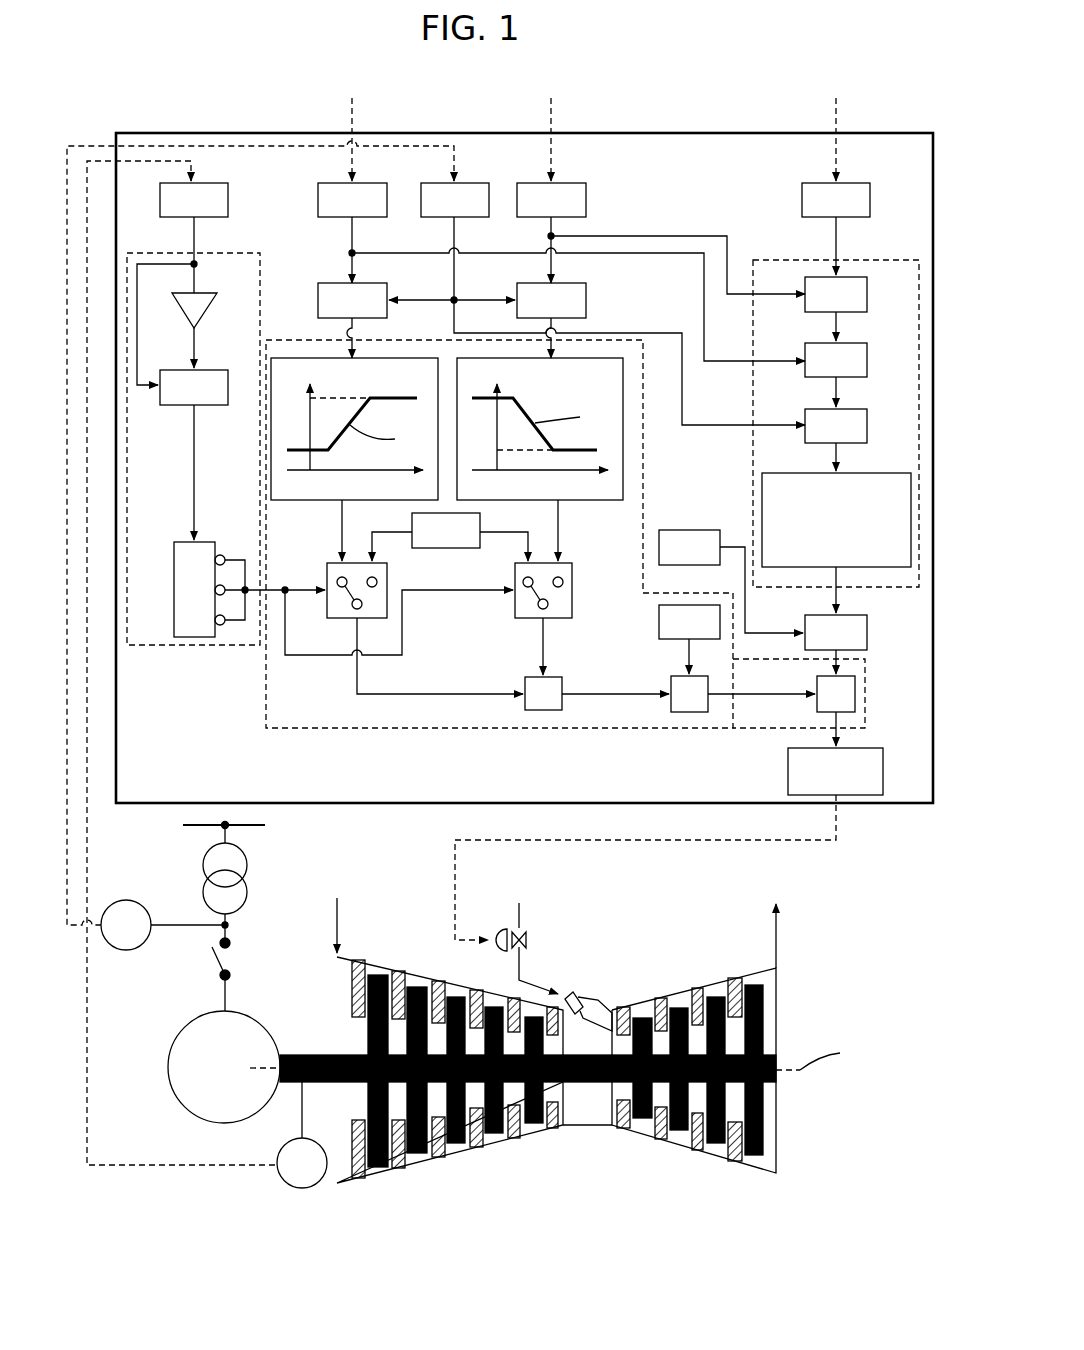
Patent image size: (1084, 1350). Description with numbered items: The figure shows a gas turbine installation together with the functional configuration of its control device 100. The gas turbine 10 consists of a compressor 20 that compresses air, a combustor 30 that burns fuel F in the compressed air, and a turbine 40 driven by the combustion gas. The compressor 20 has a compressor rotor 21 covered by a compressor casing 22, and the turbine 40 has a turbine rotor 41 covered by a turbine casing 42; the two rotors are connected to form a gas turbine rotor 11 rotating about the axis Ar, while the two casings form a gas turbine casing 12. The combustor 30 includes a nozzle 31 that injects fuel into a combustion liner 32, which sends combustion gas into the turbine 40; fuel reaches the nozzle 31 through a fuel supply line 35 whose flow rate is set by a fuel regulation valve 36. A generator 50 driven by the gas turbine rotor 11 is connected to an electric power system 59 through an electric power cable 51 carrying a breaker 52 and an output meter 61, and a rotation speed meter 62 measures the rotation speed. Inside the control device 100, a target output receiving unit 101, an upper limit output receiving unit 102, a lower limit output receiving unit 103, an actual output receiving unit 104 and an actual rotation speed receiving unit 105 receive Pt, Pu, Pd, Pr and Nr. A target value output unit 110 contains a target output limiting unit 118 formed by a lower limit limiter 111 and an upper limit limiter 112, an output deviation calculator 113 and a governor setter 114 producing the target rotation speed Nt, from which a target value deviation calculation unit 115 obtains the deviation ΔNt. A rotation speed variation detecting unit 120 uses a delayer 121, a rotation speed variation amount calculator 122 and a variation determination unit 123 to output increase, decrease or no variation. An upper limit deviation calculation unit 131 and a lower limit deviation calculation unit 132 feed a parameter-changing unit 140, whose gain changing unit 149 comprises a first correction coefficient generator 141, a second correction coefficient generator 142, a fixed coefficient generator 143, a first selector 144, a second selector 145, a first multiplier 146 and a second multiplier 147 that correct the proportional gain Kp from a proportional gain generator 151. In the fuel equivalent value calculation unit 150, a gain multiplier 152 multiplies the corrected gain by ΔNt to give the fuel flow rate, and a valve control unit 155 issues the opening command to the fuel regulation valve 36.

The gas turbine 10 is at (578, 1076).
The gas turbine rotor 11 is at (588, 1075).
The gas turbine casing 12 is at (590, 1128).
The compressor 20 is at (450, 1124).
The compressor rotor 21 is at (473, 1150).
The compressor casing 22 is at (418, 1168).
The combustor 30 is at (600, 999).
The nozzle 31 is at (575, 995).
The combustion liner 32 is at (610, 1015).
The fuel supply line 35 is at (528, 982).
The fuel regulation valve 36 is at (494, 934).
The turbine 40 is at (694, 1127).
The turbine rotor 41 is at (663, 1133).
The turbine casing 42 is at (717, 1157).
The generator 50 is at (157, 1078).
The electric power cable 51 is at (232, 993).
The breaker 52 is at (212, 960).
The electric power system 59 is at (245, 828).
The output meter 61 is at (127, 900).
The rotation speed meter 62 is at (302, 1188).
The control device 100 is at (332, 794).
The target output receiving unit 101 is at (802, 200).
The upper limit output receiving unit 102 is at (318, 198).
The lower limit output receiving unit 103 is at (586, 197).
The actual output receiving unit 104 is at (482, 183).
The actual rotation speed receiving unit 105 is at (228, 205).
The target value output unit 110 is at (856, 256).
The lower limit limiter 111 is at (867, 295).
The upper limit limiter 112 is at (867, 360).
The output deviation calculator 113 is at (867, 426).
The governor setter 114 is at (868, 473).
The target value deviation calculation unit 115 is at (867, 633).
The target output limiting unit 118 is at (790, 285).
The rotation speed variation detecting unit 120 is at (193, 480).
The delayer 121 is at (182, 303).
The rotation speed variation amount calculator 122 is at (225, 405).
The variation determination unit 123 is at (180, 542).
The upper limit deviation calculation unit 131 is at (332, 283).
The lower limit deviation calculation unit 132 is at (586, 298).
The parameter-changing unit 140 is at (260, 690).
The first correction coefficient generator 141 is at (310, 358).
The second correction coefficient generator 142 is at (600, 358).
The fixed coefficient generator 143 is at (480, 522).
The first selector 144 is at (330, 565).
The second selector 145 is at (572, 570).
The first multiplier 146 is at (540, 712).
The second multiplier 147 is at (689, 712).
The gain changing unit 149 is at (636, 415).
The fuel equivalent value calculation unit 150 is at (827, 712).
The proportional gain generator 151 is at (659, 622).
The gain multiplier 152 is at (815, 690).
The valve control unit 155 is at (862, 800).